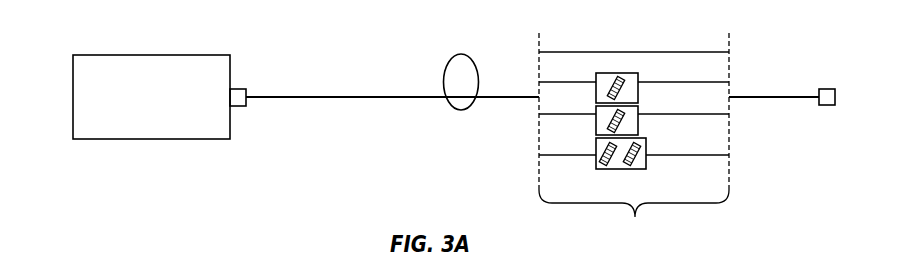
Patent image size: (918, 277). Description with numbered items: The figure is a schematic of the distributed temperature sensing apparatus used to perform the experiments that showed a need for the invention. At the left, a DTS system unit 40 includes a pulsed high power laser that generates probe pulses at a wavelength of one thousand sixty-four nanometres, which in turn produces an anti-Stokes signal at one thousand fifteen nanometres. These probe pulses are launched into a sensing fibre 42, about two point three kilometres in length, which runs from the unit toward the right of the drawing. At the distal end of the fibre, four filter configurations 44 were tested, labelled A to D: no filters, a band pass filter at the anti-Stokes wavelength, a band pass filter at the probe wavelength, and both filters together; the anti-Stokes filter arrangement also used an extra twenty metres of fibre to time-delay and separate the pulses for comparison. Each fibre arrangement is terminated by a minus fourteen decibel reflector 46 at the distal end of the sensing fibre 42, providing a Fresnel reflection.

The DTS system unit 40 is at (165, 108).
The sensing fibre 42 is at (322, 97).
The filter configurations 44 is at (634, 137).
The reflector 46 is at (828, 105).